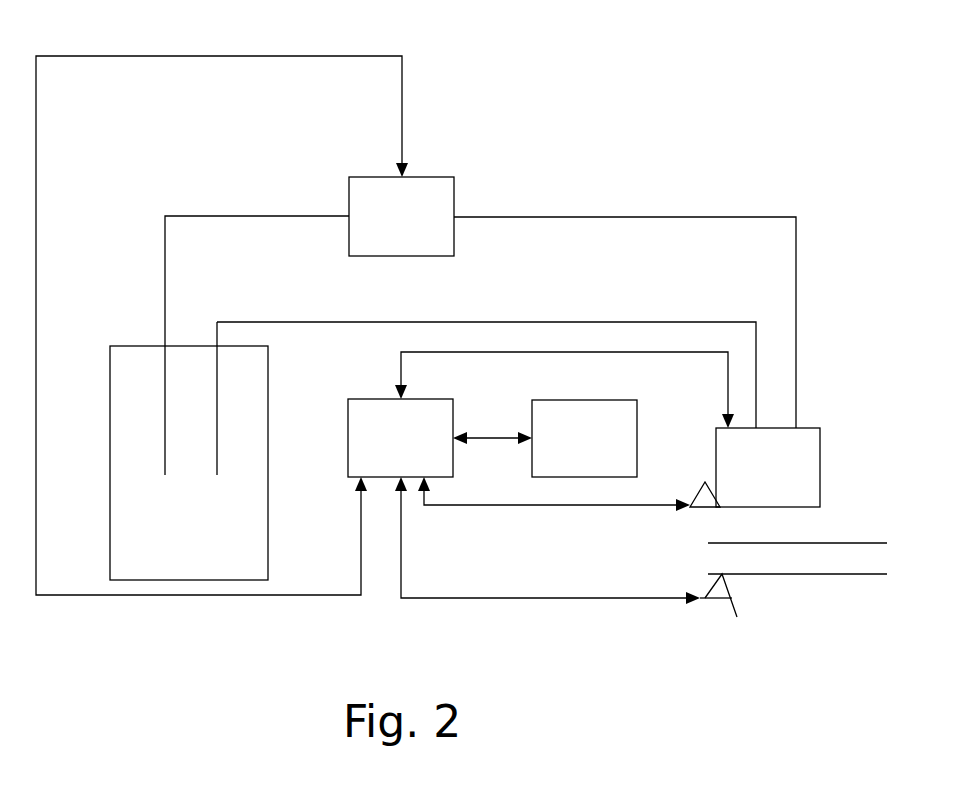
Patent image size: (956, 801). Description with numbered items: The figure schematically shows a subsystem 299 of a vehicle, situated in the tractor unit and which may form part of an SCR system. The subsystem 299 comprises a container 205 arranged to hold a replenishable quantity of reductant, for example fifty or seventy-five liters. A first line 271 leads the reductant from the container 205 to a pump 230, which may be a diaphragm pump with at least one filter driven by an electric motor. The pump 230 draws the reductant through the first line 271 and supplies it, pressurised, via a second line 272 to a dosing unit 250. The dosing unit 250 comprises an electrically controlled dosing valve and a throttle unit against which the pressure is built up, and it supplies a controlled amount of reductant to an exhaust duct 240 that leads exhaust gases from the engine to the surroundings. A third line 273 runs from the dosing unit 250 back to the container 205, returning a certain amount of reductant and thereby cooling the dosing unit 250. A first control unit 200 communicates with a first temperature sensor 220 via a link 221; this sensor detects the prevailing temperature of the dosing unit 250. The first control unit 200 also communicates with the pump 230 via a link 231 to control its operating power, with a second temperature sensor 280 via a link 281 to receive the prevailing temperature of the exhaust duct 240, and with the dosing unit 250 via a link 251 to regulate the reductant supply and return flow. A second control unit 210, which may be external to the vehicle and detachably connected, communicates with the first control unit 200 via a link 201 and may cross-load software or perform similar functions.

The subsystem 299 is at (500, 78).
The link 231 is at (288, 57).
The first line 271 is at (218, 214).
The second line 272 is at (577, 217).
The third line 273 is at (705, 322).
The link 251 is at (658, 355).
The container 205 is at (133, 345).
The pump 230 is at (401, 216).
The first control unit 200 is at (400, 438).
The second control unit 210 is at (584, 438).
The dosing unit 250 is at (768, 467).
The link 201 is at (478, 432).
The link 221 is at (480, 506).
The first temperature sensor 220 is at (698, 500).
The link 281 is at (548, 597).
The second temperature sensor 280 is at (737, 617).
The exhaust duct 240 is at (785, 575).